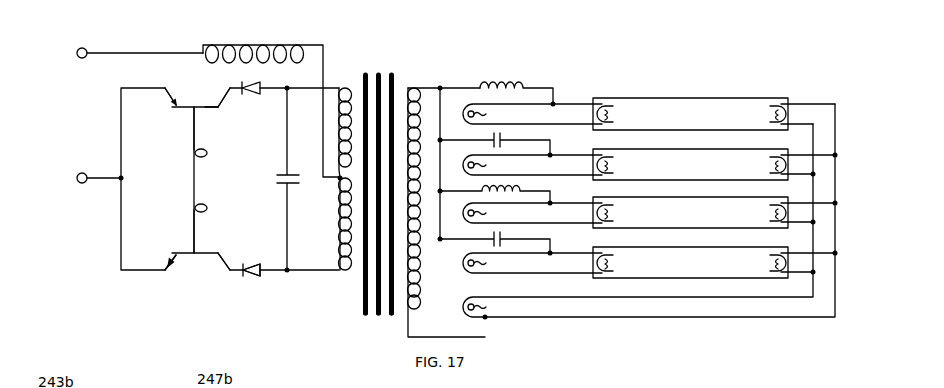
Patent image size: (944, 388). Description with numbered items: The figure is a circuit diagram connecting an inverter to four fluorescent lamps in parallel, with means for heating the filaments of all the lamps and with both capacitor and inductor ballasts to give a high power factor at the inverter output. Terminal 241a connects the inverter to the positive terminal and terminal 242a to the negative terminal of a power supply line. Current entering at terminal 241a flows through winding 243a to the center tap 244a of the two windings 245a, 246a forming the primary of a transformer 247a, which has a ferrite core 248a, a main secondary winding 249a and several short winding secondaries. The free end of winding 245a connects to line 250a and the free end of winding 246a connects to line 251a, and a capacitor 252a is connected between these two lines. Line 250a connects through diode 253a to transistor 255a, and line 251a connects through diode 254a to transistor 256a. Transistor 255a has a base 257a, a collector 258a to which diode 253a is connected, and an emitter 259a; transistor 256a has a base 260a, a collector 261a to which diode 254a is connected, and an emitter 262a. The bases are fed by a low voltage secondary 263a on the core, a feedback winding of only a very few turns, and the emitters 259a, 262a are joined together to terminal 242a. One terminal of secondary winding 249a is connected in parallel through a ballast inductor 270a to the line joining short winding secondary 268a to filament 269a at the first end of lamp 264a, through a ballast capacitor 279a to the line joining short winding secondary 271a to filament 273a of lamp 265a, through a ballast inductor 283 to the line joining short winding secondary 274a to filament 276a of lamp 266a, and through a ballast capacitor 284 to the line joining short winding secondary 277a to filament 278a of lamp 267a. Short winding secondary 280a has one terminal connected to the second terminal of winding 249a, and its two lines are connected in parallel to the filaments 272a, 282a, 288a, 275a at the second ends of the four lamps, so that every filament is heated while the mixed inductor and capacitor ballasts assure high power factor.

The terminal 241a is at (83, 47).
The terminal 242a is at (83, 172).
The winding 243a is at (268, 42).
The center tap 244a is at (391, 179).
The winding 245a is at (340, 86).
The winding 246a is at (346, 272).
The transformer 247a is at (386, 58).
The ferrite core 248a is at (391, 314).
The main secondary winding 249a is at (412, 84).
The line 250a is at (314, 86).
The line 251a is at (290, 274).
The capacitor 252a is at (276, 181).
The diode 253a is at (225, 98).
The diode 254a is at (273, 246).
The transistor 255a is at (192, 97).
The transistor 256a is at (199, 278).
The base 257a is at (193, 118).
The collector 258a is at (216, 112).
The emitter 259a is at (172, 100).
The base 260a is at (176, 252).
The collector 261a is at (222, 256).
The emitter 262a is at (171, 262).
The low voltage secondary 263a is at (206, 205).
The lamp 264a is at (712, 125).
The lamp 265a is at (712, 175).
The lamp 266a is at (712, 224).
The lamp 267a is at (712, 274).
The short winding secondary 268a is at (468, 102).
The filament 269a is at (608, 108).
The ballast inductor 270a is at (492, 82).
The short winding secondary 271a is at (480, 165).
The filament 272a is at (776, 108).
The filament 273a is at (608, 160).
The short winding secondary 274a is at (480, 213).
The filament 275a is at (776, 258).
The filament 276a is at (608, 208).
The short winding secondary 277a is at (480, 263).
The filament 278a is at (608, 258).
The ballast capacitor 279a is at (505, 137).
The short winding secondary 280a is at (480, 307).
The filament 282a is at (776, 160).
The ballast inductor 283 is at (520, 192).
The ballast capacitor 284 is at (511, 243).
The filament 288a is at (776, 208).